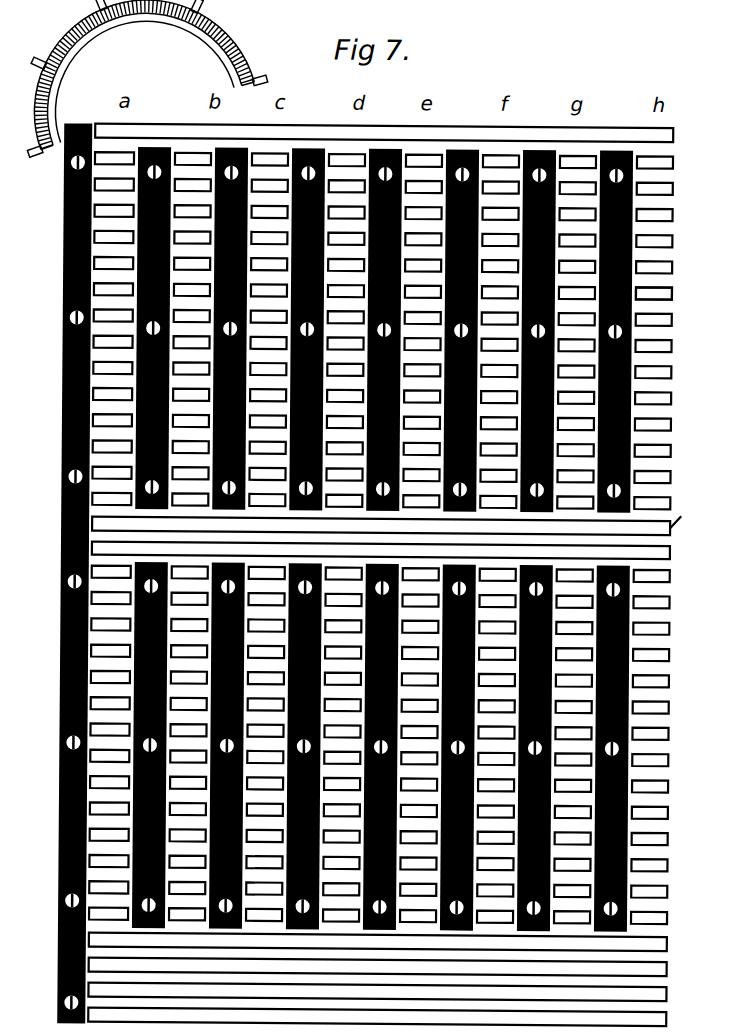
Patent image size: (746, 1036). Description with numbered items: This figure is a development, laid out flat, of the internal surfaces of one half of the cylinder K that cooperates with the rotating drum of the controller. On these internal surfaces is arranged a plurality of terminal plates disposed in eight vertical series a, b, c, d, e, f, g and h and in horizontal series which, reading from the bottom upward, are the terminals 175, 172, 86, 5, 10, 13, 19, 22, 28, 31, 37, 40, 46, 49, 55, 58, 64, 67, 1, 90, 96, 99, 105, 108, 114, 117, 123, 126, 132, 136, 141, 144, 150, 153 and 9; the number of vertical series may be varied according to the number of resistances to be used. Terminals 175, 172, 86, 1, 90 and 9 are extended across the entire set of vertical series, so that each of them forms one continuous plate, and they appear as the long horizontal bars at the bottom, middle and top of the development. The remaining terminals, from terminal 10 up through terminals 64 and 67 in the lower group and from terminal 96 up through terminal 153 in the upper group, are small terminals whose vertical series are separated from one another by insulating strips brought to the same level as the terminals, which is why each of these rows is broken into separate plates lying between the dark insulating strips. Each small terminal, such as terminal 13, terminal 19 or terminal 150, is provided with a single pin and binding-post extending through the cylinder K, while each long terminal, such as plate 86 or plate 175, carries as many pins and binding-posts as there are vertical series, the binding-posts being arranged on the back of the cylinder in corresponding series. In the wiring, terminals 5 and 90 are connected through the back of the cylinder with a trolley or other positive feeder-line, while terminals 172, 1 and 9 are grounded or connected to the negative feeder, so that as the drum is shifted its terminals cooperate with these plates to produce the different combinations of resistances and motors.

The terminal plate 9 is at (673, 135).
The terminal plate 1 is at (673, 553).
The terminal plate 5 is at (673, 944).
The terminal plate 86 is at (673, 969).
The terminal plate 172 is at (673, 994).
The terminal plate 175 is at (673, 1019).
The terminal plate 153 is at (673, 162).
The terminal plate 150 is at (673, 189).
The terminal plate 144 is at (673, 215).
The terminal plate 141 is at (673, 241).
The contact strip 136 is at (673, 267).
The terminal plate 132 is at (673, 294).
The terminal plate 126 is at (673, 294).
The terminal plate 123 is at (683, 310).
The terminal plate 117 is at (673, 346).
The terminal plate 114 is at (673, 372).
The terminal plate 108 is at (673, 398).
The terminal plate 105 is at (673, 424).
The terminal plate 99 is at (673, 451).
The terminal plate 96 is at (673, 477).
The terminal plate 90 is at (673, 503).
The contact strip 67 is at (673, 576).
The terminal plate 64 is at (673, 602).
The terminal plate 58 is at (673, 629).
The terminal plate 55 is at (673, 655).
The terminal plate 49 is at (673, 681).
The terminal plate 46 is at (673, 708).
The terminal plate 40 is at (673, 734).
The terminal plate 37 is at (673, 760).
The terminal plate 31 is at (673, 786).
The terminal plate 28 is at (673, 813).
The terminal plate 22 is at (673, 839).
The terminal plate 19 is at (673, 865).
The terminal plate 13 is at (673, 892).
The terminal plate 10 is at (673, 918).